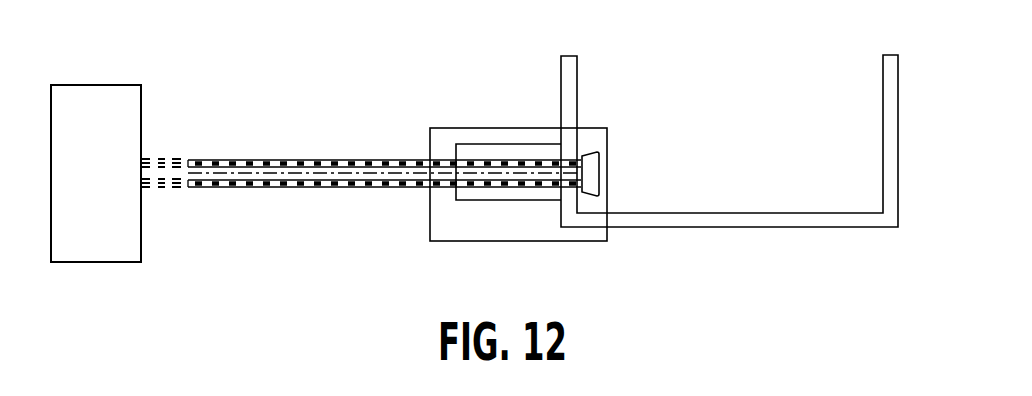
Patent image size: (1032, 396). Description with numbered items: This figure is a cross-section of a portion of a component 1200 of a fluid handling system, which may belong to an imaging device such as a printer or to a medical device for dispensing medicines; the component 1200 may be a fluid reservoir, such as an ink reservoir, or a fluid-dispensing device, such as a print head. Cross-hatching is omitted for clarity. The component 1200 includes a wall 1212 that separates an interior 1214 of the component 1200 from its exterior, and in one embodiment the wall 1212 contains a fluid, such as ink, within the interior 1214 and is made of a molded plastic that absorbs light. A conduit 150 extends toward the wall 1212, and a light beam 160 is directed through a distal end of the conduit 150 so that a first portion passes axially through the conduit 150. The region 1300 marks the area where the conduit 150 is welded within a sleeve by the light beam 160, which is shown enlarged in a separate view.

The conduit 150 is at (245, 158).
The light beam 160 is at (162, 158).
The component 1200 is at (313, 275).
The wall 1212 is at (573, 73).
The interior 1214 is at (729, 143).
The region 1300 is at (507, 124).